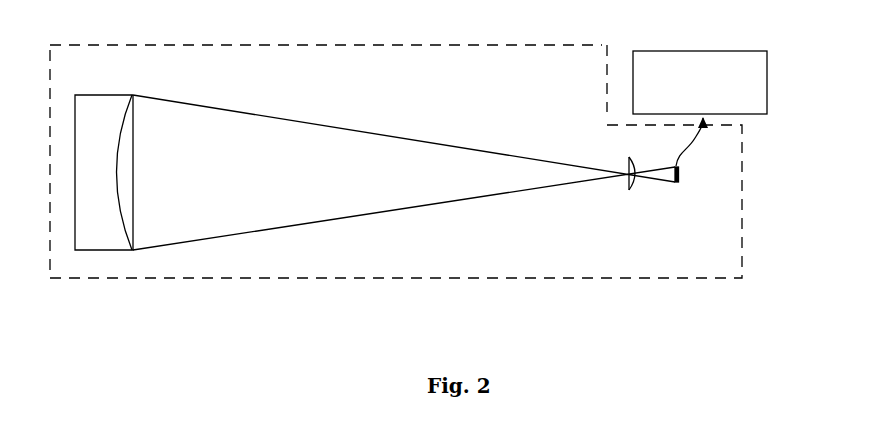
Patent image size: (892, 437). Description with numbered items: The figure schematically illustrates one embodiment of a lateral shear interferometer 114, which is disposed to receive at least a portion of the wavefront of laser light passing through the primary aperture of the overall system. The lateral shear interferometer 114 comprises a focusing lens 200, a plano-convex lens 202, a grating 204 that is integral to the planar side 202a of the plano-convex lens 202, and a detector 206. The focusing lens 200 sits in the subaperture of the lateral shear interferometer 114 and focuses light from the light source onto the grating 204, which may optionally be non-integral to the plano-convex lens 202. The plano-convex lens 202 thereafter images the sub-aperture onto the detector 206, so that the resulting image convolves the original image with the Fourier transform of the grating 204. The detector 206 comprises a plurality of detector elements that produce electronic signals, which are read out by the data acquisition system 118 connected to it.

The lateral shear interferometer 114 is at (349, 281).
The data acquisition system 118 is at (702, 99).
The focusing lens 200 is at (130, 120).
The plano-convex lens 202 is at (612, 178).
The planar side 202a is at (624, 170).
The grating 204 is at (626, 189).
The detector 206 is at (681, 187).